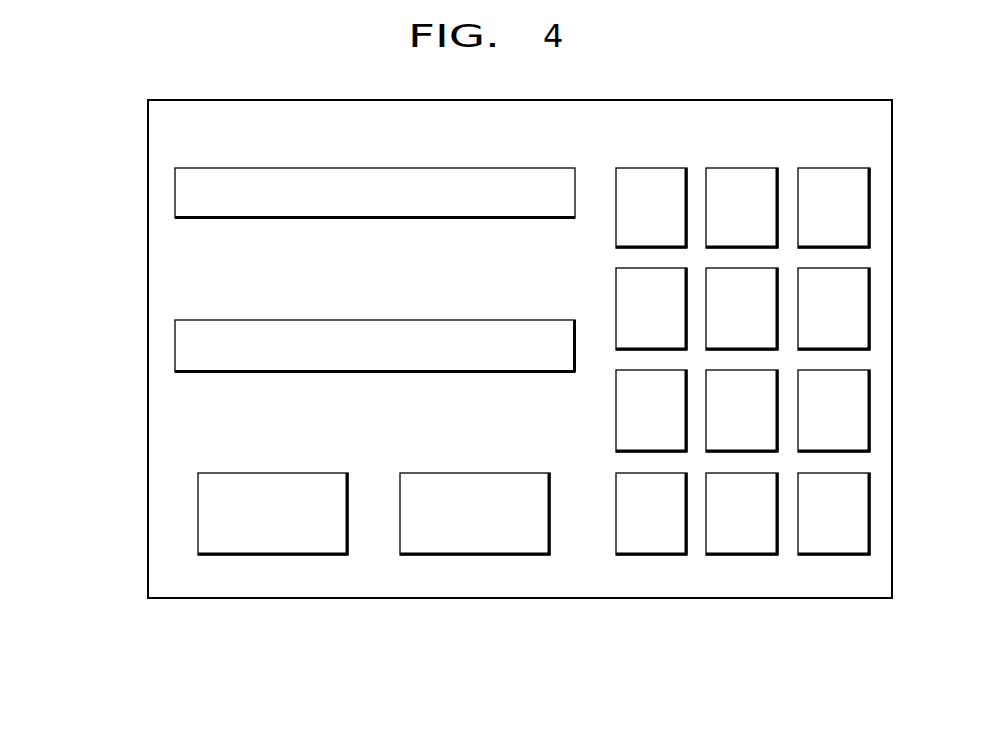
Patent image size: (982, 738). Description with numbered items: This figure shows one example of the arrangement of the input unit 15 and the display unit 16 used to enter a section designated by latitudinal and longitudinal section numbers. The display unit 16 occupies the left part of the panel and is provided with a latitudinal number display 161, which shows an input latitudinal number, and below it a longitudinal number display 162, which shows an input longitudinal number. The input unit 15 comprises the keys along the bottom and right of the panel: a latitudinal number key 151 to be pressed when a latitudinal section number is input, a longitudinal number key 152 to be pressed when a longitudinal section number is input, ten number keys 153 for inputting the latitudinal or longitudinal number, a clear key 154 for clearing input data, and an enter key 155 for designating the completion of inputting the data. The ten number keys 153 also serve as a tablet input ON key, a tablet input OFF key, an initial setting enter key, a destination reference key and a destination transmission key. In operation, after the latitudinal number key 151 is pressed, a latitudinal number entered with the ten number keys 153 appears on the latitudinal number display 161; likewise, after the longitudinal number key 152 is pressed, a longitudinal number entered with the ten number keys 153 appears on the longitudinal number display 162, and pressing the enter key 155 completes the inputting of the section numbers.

The input unit 15 is at (867, 657).
The latitudinal number key 151 is at (262, 555).
The longitudinal number key 152 is at (473, 555).
The ten number keys 153 is at (645, 574).
The clear key 154 is at (743, 555).
The enter key 155 is at (838, 555).
The display unit 16 is at (85, 168).
The latitudinal number display 161 is at (174, 200).
The longitudinal number display 162 is at (174, 350).